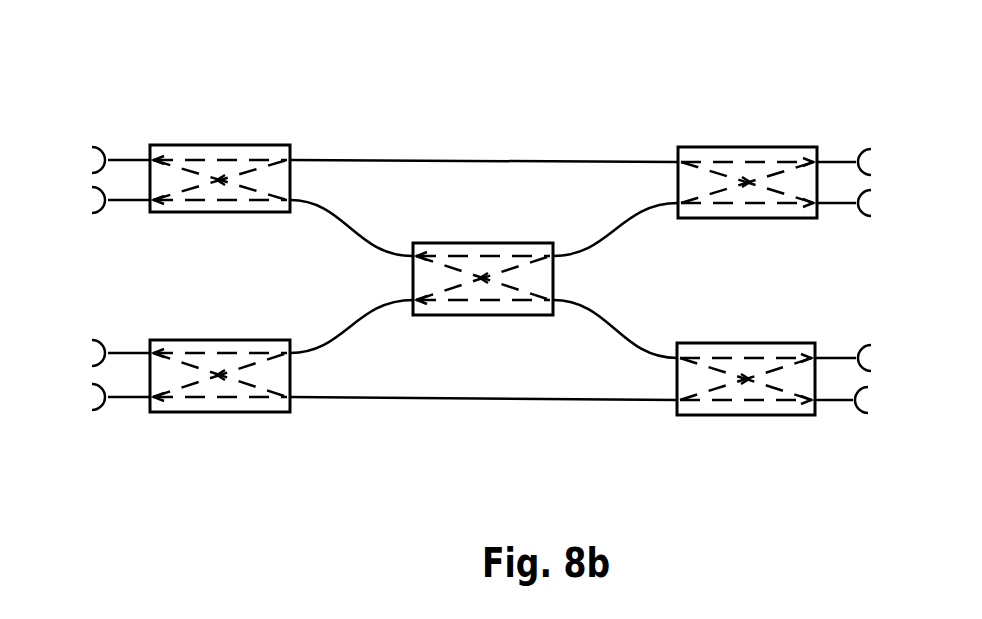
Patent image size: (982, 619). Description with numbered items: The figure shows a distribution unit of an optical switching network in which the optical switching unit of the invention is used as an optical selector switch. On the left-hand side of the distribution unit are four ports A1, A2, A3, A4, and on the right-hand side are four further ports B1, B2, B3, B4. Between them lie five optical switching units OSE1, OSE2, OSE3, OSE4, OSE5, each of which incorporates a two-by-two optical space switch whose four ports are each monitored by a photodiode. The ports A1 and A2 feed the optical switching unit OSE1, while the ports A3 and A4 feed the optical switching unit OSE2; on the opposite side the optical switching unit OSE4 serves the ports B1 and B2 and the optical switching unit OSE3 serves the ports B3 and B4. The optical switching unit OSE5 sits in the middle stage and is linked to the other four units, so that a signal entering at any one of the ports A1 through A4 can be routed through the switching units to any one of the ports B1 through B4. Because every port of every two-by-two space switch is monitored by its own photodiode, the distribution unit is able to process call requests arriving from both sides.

The optical switching unit OSE1 is at (247, 132).
The optical switching unit OSE2 is at (258, 425).
The optical switching unit OSE3 is at (762, 428).
The optical switching unit OSE4 is at (737, 132).
The optical switching unit OSE5 is at (498, 230).
The port A1 is at (93, 156).
The port A2 is at (93, 202).
The port A3 is at (94, 352).
The port A4 is at (94, 398).
The port B1 is at (873, 162).
The port B2 is at (873, 205).
The port B3 is at (870, 356).
The port B4 is at (867, 403).